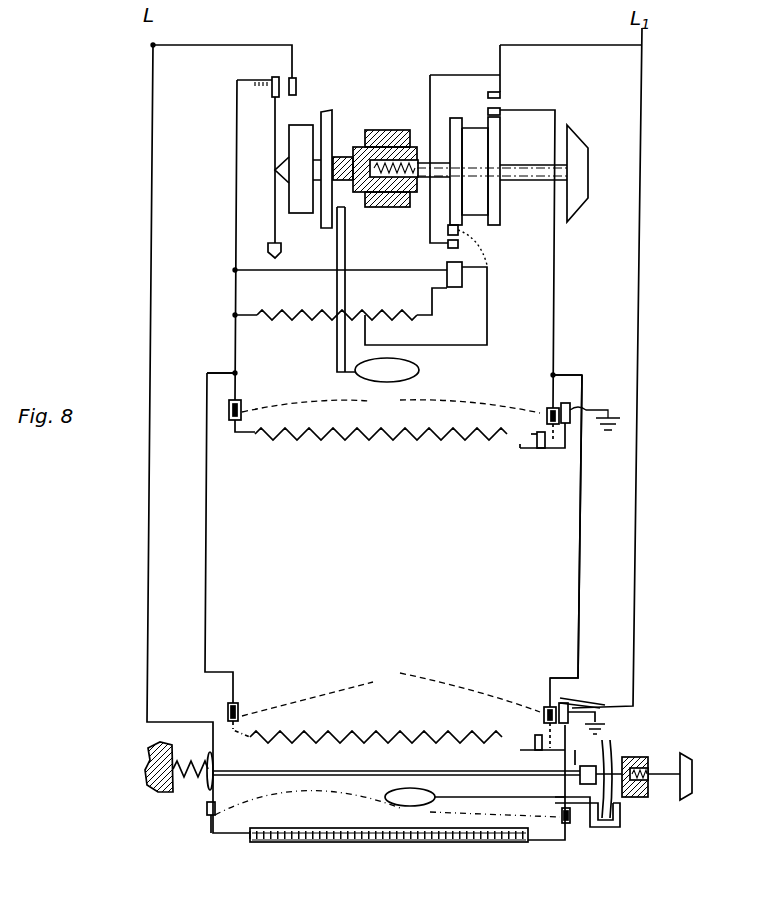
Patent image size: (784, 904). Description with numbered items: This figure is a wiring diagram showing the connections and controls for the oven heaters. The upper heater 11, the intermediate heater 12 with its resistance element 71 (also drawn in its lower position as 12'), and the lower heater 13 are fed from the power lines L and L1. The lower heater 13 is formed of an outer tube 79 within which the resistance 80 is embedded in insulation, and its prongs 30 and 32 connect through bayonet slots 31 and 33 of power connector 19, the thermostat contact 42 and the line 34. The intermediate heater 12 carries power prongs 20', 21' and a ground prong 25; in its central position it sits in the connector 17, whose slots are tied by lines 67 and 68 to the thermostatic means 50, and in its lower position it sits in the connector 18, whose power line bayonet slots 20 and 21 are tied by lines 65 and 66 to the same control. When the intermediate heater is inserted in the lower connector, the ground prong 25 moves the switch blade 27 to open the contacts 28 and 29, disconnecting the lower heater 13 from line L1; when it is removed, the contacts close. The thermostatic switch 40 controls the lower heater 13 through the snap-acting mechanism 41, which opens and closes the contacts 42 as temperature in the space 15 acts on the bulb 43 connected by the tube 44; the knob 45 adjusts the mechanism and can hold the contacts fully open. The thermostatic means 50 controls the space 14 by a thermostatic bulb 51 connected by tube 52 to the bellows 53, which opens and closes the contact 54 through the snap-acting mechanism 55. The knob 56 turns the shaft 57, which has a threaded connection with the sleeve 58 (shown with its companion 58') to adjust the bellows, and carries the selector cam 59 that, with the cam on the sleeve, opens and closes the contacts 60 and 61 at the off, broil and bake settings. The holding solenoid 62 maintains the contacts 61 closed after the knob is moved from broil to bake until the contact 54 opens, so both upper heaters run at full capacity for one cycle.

The upper heater 11 is at (282, 322).
The intermediate heater 12 is at (381, 452).
The resistance element 12' is at (376, 721).
The lower heater 13 is at (412, 845).
The space 14 is at (294, 347).
The space 15 is at (362, 538).
The connector 17 is at (391, 405).
The connector 18 is at (391, 691).
The power connector 19 is at (387, 796).
The power line bayonet slot 20 is at (539, 712).
The power prong 20' is at (562, 413).
The power line bayonet slot 21 is at (255, 704).
The power prong 21' is at (265, 399).
The ground prong 25 is at (566, 451).
The switch blade 27 is at (578, 698).
The contact 28 is at (586, 702).
The contact 29 is at (580, 711).
The prong 30 is at (219, 815).
The bayonet slot 31 is at (216, 803).
The prong 32 is at (567, 832).
The bayonet slot 33 is at (574, 822).
The line 34 is at (561, 761).
The thermostatic switch 40 is at (394, 767).
The snap-acting mechanism 41 is at (620, 822).
The thermostat contact 42 is at (215, 768).
The bulb 43 is at (418, 789).
The tube 44 is at (477, 800).
The knob 45 is at (692, 780).
The thermostatic means 50 is at (342, 160).
The thermostatic bulb 51 is at (410, 372).
The tube 52 is at (346, 290).
The bellows 53 is at (325, 232).
The contact 54 is at (271, 87).
The snap-acting mechanism 55 is at (300, 127).
The knob 56 is at (584, 176).
The shaft 57 is at (518, 182).
The sleeve 58 is at (393, 150).
The friction disc 58' is at (517, 171).
The selector cam 59 is at (450, 206).
The contacts 60 is at (497, 108).
The contacts 61 is at (478, 243).
The holding solenoid 62 is at (447, 270).
The line 65 is at (207, 608).
The line 66 is at (579, 612).
The line 67 is at (238, 383).
The line 68 is at (553, 378).
The resistance element 71 is at (426, 446).
The outer tube 79 is at (336, 845).
The resistance 80 is at (272, 828).